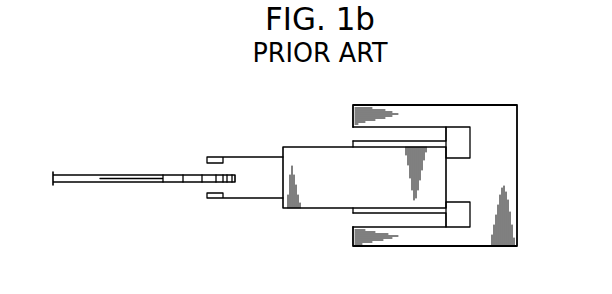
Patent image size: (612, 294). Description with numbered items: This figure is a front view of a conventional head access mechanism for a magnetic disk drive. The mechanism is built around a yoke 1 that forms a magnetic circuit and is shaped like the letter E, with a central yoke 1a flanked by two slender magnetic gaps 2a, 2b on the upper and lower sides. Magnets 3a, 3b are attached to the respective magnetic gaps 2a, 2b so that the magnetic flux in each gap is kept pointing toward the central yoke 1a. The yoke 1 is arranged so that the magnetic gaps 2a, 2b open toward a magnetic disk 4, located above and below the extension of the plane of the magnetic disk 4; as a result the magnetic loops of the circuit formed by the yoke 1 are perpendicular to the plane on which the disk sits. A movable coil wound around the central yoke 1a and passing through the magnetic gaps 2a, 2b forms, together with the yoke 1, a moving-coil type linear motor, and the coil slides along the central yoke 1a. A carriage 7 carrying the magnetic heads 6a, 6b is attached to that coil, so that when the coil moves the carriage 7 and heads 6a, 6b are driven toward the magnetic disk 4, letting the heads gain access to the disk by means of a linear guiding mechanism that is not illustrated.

The yoke 1 is at (513, 129).
The central yoke 1a is at (467, 185).
The magnetic gap 2a is at (438, 146).
The magnetic gap 2b is at (442, 212).
The magnet 3a is at (429, 134).
The magnet 3b is at (430, 223).
The magnetic disk 4 is at (121, 175).
The magnetic head 6a is at (216, 155).
The magnetic head 6b is at (215, 202).
The carriage 7 is at (310, 157).